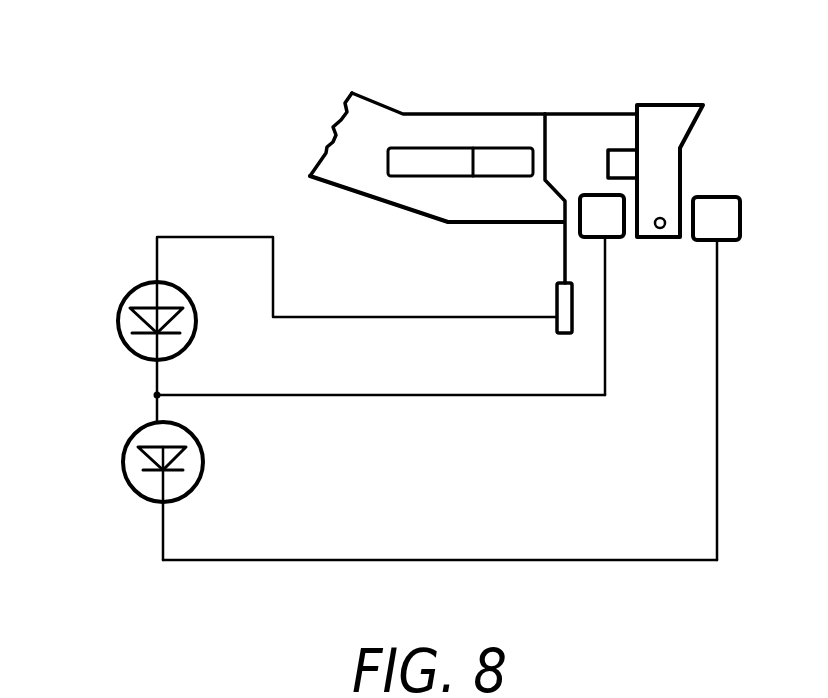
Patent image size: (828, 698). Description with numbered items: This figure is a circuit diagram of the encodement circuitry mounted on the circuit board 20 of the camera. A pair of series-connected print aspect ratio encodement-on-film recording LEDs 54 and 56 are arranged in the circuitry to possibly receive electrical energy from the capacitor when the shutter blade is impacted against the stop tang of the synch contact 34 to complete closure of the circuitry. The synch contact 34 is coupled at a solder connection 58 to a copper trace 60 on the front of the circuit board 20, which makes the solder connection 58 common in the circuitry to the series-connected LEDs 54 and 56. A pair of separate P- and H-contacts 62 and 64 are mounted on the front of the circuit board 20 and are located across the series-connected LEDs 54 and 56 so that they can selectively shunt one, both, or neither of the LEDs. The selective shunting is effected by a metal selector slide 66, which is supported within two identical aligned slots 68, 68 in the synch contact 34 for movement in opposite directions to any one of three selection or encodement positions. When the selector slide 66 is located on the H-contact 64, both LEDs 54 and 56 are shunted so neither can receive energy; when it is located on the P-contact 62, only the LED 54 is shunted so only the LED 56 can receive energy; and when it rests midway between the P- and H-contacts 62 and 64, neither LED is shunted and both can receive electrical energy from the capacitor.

The circuit board 20 is at (585, 114).
The synch contact 34 is at (453, 127).
The LED 54 is at (118, 337).
The LED 56 is at (128, 478).
The solder connection 58 is at (555, 300).
The copper trace 60 is at (368, 320).
The P-contact 62 is at (617, 240).
The H-contact 64 is at (720, 196).
The selector slide 66 is at (660, 120).
The slot 68 is at (430, 173).